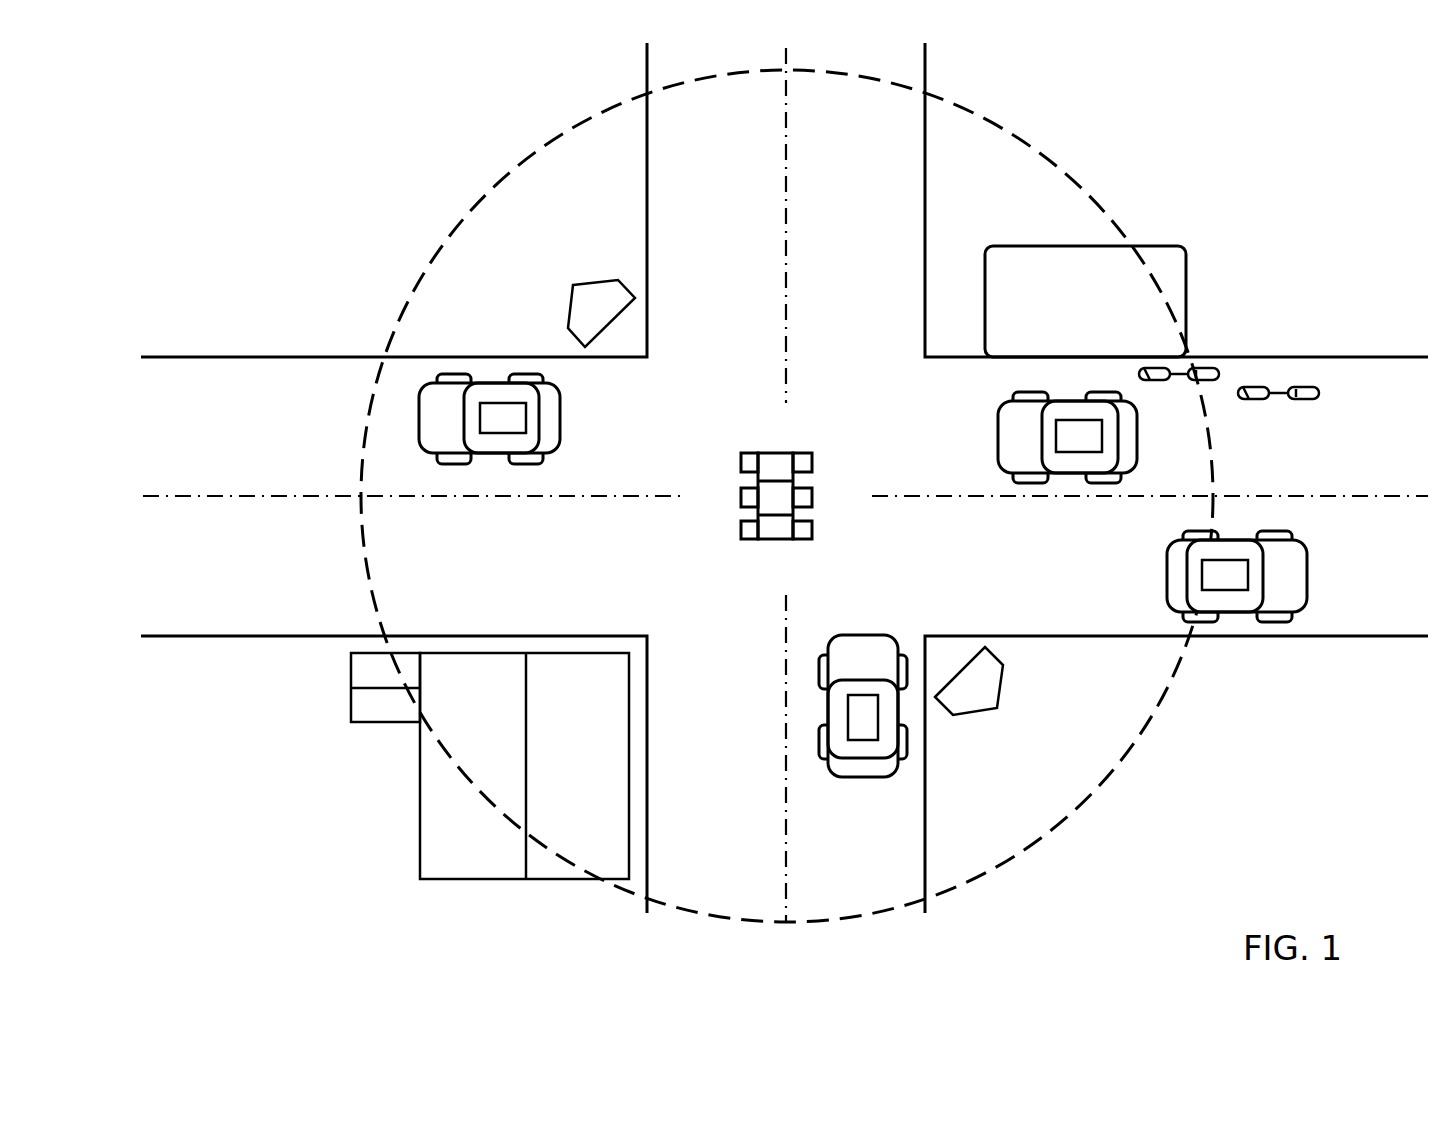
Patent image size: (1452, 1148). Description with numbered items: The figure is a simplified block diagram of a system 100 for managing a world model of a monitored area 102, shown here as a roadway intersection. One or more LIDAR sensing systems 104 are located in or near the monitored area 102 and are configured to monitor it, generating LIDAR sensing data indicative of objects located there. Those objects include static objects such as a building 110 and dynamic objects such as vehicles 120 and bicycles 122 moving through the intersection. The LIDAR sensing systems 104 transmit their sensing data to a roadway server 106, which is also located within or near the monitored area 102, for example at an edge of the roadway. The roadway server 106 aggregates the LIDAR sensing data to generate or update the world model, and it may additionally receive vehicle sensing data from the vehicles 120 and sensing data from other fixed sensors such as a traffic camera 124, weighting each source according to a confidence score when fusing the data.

The system 100 is at (290, 131).
The monitored area 102 is at (963, 104).
The LIDAR sensing system 104 is at (785, 497).
The roadway server 106 is at (1186, 301).
The building 110 is at (490, 766).
The vehicle 120 is at (863, 575).
The bicycles 122 is at (1335, 373).
The traffic camera 124 is at (778, 452).